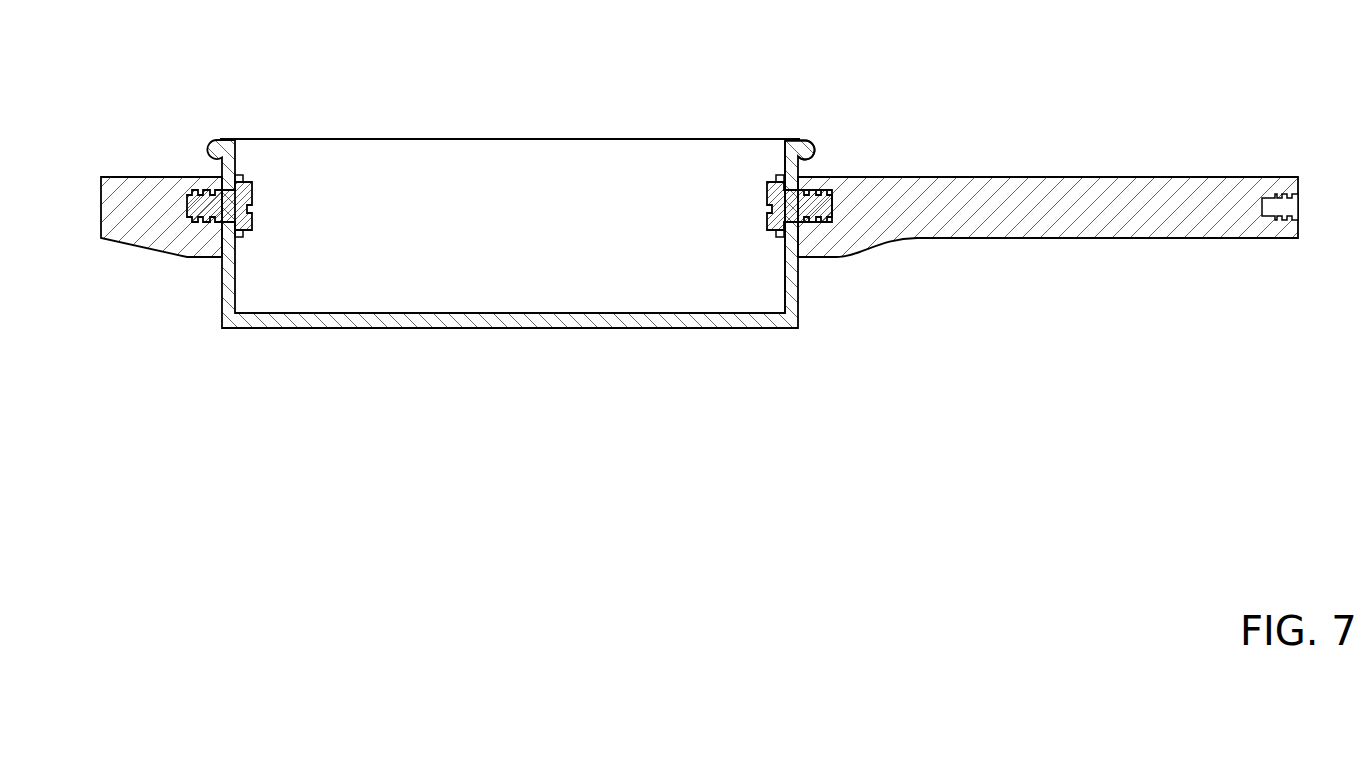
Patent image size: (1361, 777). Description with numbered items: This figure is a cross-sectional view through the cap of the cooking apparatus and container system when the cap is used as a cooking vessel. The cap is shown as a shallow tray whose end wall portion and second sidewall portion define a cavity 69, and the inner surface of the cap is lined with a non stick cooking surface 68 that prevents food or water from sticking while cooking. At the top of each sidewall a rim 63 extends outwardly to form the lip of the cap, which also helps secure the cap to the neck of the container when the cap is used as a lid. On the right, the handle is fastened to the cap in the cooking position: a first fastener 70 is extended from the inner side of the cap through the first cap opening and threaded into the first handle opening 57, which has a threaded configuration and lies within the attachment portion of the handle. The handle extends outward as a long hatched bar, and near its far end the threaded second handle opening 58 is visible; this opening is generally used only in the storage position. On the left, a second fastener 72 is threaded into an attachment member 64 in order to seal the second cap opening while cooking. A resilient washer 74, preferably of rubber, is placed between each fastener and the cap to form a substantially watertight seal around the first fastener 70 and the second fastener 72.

The first handle opening 57 is at (833, 205).
The second handle opening 58 is at (1298, 204).
The rim 63 is at (812, 143).
The attachment member 64 is at (150, 177).
The non stick cooking surface 68 is at (433, 313).
The cavity 69 is at (748, 292).
The first fastener 70 is at (765, 192).
The second fastener 72 is at (255, 192).
The washer 74 is at (243, 235).